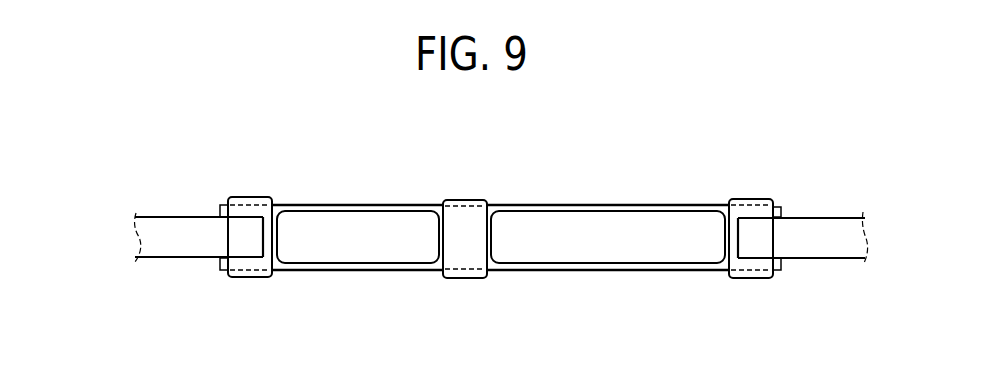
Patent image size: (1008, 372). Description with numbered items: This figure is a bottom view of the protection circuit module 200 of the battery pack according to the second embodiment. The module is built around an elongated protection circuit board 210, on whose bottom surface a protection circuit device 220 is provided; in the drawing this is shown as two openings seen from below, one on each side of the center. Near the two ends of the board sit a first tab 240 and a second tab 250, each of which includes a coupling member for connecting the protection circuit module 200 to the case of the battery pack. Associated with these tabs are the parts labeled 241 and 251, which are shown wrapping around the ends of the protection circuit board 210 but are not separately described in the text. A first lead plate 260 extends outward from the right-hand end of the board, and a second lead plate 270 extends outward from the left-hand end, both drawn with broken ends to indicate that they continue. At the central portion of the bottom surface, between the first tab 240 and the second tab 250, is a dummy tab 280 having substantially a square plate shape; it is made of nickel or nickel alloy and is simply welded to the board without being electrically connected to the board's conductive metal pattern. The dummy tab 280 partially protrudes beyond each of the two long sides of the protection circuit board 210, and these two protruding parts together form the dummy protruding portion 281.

The protection circuit module 200 is at (123, 121).
The protection circuit board 210 is at (517, 203).
The protection circuit device 220 is at (501, 269).
The first tab 240 is at (737, 263).
The right clamp 241 is at (765, 279).
The second tab 250 is at (237, 265).
The left clamp 251 is at (263, 280).
The first lead plate 260 is at (830, 222).
The second lead plate 270 is at (178, 219).
The dummy tab 280 is at (448, 215).
The dummy protruding portion 281 is at (455, 193).